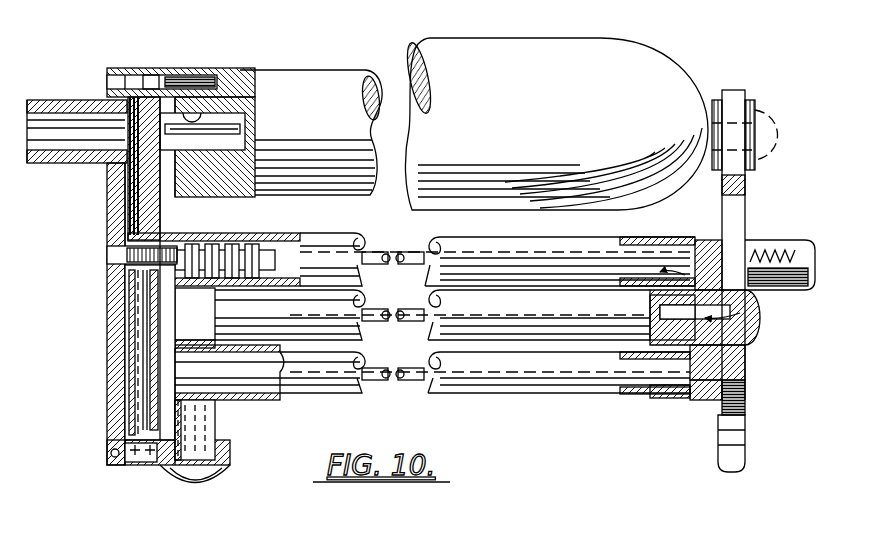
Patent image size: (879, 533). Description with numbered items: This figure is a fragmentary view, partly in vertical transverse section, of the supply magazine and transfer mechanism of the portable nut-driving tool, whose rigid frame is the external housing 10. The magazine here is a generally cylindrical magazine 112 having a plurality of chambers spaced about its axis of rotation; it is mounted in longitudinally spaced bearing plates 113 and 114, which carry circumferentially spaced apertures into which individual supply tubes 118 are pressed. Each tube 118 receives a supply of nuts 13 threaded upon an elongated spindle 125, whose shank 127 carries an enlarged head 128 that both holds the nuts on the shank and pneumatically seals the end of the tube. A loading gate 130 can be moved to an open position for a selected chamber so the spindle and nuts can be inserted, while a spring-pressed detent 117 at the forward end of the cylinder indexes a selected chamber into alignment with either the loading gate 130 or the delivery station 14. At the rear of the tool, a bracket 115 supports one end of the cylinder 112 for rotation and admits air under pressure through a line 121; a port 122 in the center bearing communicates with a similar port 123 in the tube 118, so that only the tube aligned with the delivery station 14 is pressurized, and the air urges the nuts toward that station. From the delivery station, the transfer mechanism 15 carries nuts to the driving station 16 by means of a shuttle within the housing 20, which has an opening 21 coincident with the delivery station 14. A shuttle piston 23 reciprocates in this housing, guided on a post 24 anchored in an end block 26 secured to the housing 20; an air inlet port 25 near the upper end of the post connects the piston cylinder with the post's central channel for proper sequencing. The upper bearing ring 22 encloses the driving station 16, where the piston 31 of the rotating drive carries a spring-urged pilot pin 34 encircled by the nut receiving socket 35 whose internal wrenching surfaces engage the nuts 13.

The external housing 10 is at (596, 40).
The nuts 13 is at (145, 240).
The delivery station 14 is at (118, 257).
The transfer mechanism 15 is at (104, 355).
The driving station 16 is at (120, 134).
The housing 20 is at (104, 228).
The opening 21 is at (195, 314).
The upper bearing ring 22 is at (170, 70).
The shuttle piston 23 is at (148, 305).
The post 24 is at (128, 383).
The air inlet port 25 is at (143, 318).
The end block 26 is at (112, 466).
The piston 31 is at (252, 130).
The pilot pin 34 is at (248, 134).
The nut receiving socket 35 is at (215, 122).
The cylindrical magazine 112 is at (495, 400).
The bearing plate 113 is at (215, 400).
The bearing plate 114 is at (680, 400).
The bracket 115 is at (746, 380).
The spring-pressed detent 117 is at (217, 477).
The supply tubes 118 is at (485, 360).
The line 121 is at (746, 458).
The port 122 is at (746, 318).
The port 123 is at (650, 306).
The spindle 125 is at (405, 251).
The shank 127 is at (375, 320).
The enlarged head 128 is at (705, 256).
The loading gate 130 is at (760, 240).